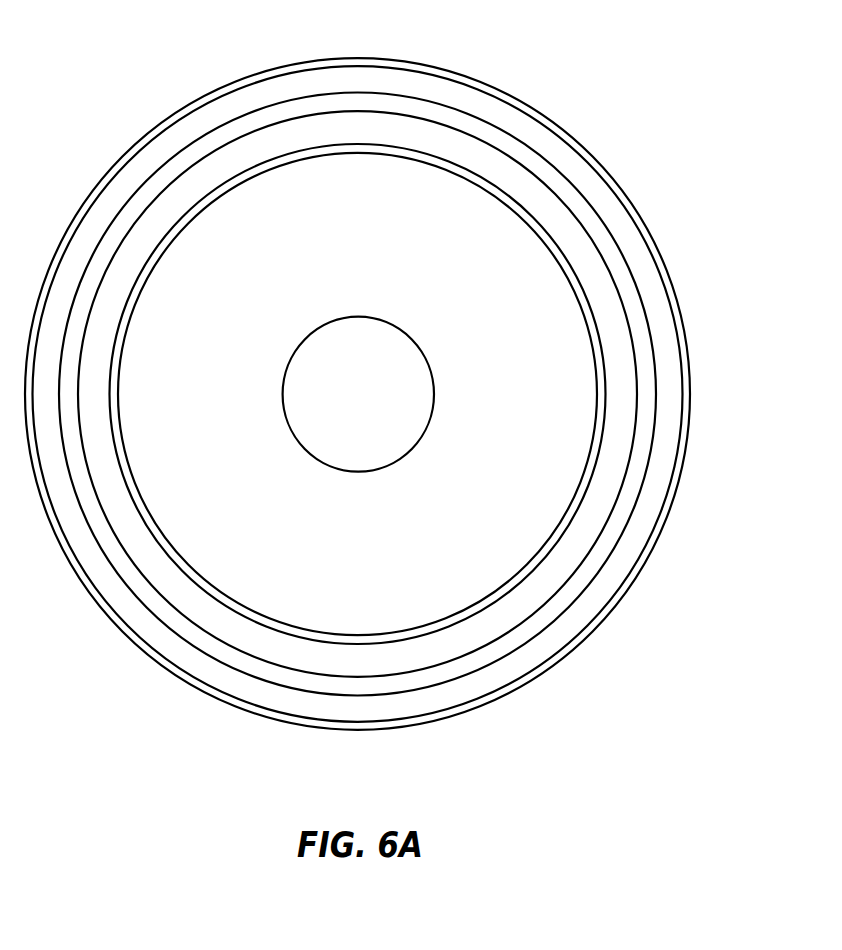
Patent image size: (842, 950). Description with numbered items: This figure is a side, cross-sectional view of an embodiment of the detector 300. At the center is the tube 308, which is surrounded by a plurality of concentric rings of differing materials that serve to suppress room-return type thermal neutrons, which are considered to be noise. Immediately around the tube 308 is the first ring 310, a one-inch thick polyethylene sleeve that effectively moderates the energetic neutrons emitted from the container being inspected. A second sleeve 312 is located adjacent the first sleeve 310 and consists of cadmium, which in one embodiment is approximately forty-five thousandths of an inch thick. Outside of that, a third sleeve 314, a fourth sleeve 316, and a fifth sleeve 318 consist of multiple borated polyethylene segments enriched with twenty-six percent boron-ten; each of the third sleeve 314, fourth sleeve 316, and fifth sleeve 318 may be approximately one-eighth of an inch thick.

The detector 300 is at (485, 80).
The tube 308 is at (283, 396).
The first ring 310 is at (462, 277).
The second sleeve 312 is at (513, 203).
The third sleeve 314 is at (572, 238).
The fourth sleeve 316 is at (618, 270).
The fifth sleeve 318 is at (677, 317).